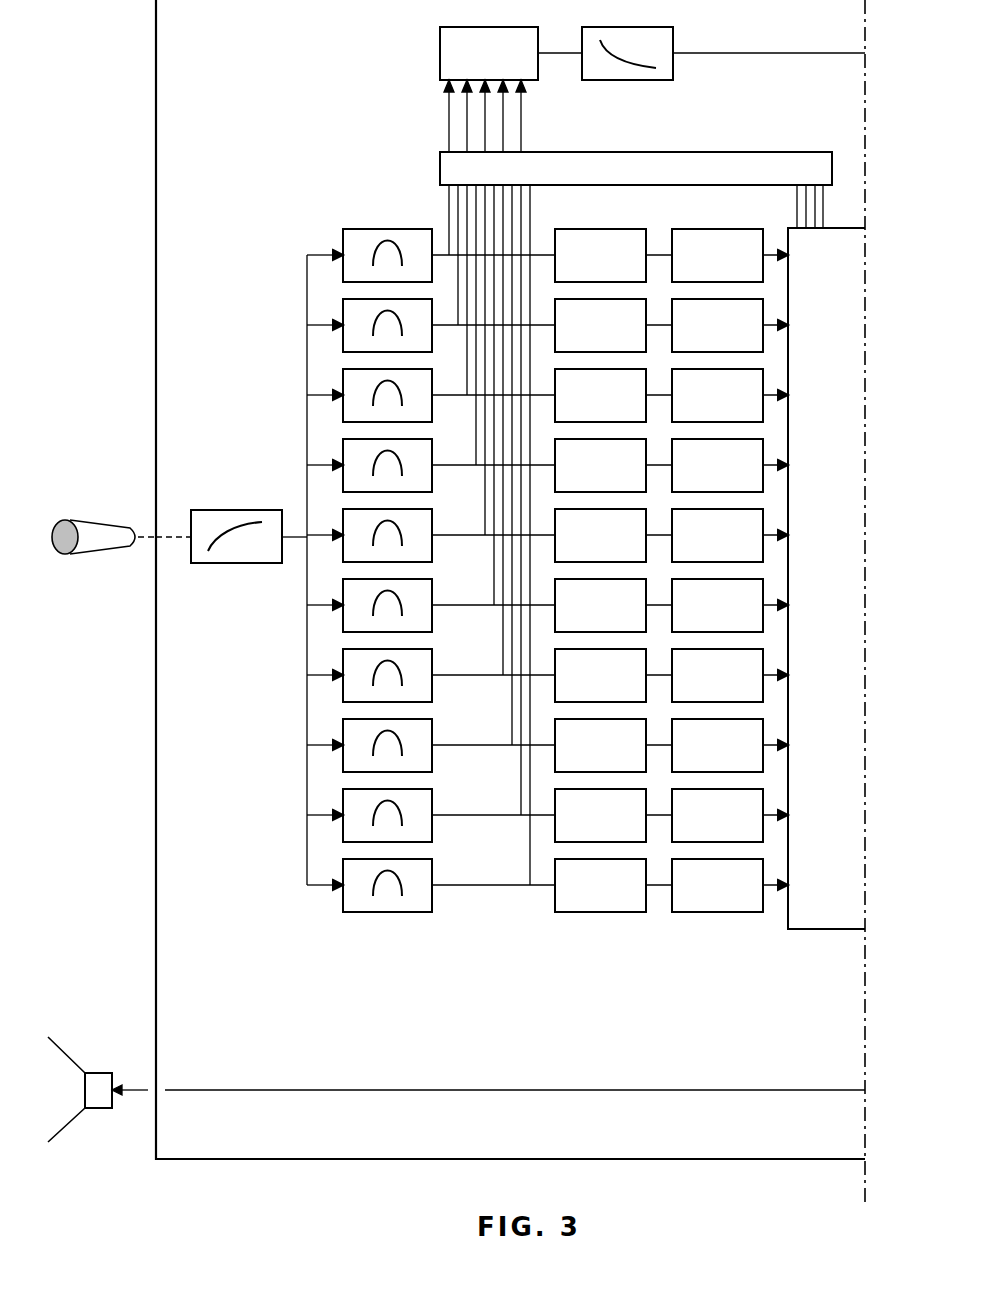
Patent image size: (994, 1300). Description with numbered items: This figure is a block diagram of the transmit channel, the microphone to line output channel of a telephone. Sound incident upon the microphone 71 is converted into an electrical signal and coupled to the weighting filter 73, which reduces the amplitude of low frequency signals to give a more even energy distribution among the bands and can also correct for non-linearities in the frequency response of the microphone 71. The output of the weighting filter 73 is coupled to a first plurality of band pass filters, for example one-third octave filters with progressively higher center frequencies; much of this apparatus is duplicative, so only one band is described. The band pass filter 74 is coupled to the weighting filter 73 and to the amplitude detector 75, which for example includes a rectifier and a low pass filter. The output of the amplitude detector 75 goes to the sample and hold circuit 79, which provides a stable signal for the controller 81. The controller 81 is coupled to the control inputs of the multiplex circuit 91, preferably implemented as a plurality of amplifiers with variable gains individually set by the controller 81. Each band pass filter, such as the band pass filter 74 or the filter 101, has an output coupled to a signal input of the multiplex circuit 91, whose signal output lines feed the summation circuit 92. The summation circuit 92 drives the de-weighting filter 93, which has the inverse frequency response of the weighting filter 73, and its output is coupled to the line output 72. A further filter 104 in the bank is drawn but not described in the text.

The microphone 71 is at (84, 520).
The line output 72 is at (790, 53).
The weighting filter 73 is at (236, 566).
The band pass filter 74 is at (339, 593).
The amplitude detector 75 is at (600, 913).
The sample and hold circuit 79 is at (717, 913).
The controller 81 is at (840, 930).
The multiplex circuit 91 is at (706, 152).
The summation circuit 92 is at (440, 52).
The de-weighting filter 93 is at (628, 80).
The filter 101 is at (343, 660).
The band-pass filter channel 7 104 is at (343, 730).